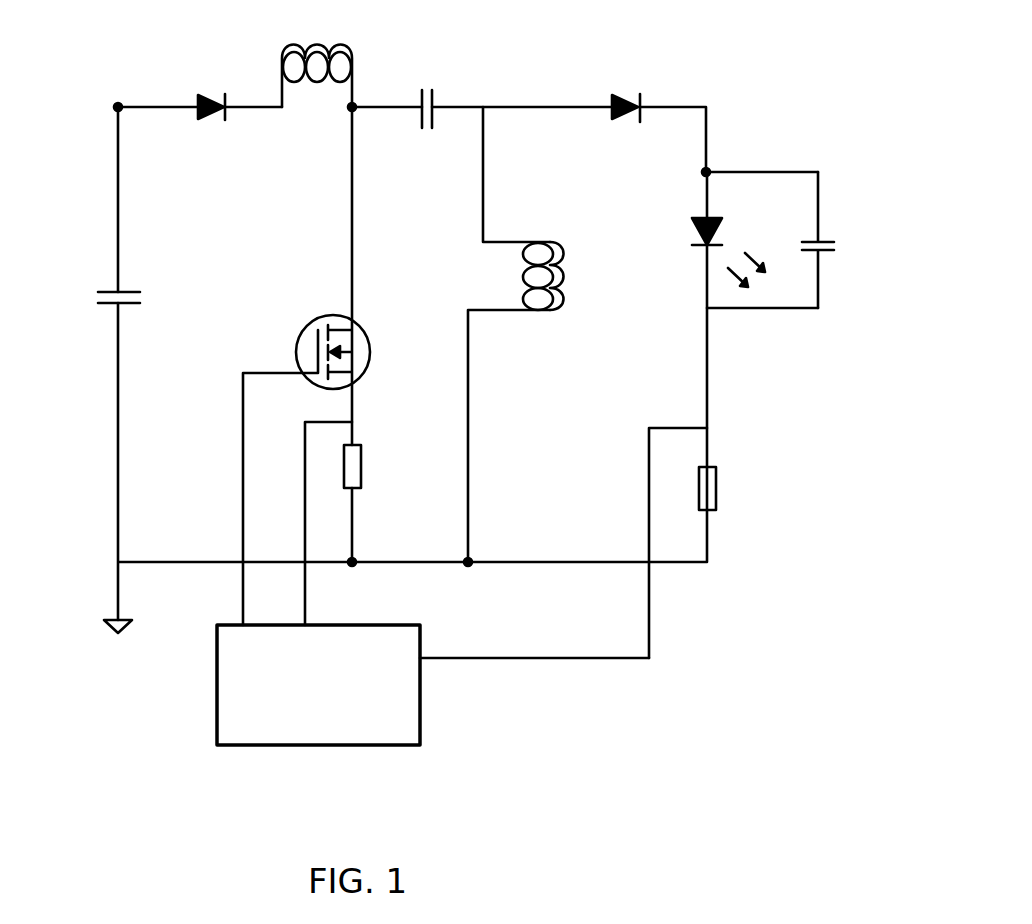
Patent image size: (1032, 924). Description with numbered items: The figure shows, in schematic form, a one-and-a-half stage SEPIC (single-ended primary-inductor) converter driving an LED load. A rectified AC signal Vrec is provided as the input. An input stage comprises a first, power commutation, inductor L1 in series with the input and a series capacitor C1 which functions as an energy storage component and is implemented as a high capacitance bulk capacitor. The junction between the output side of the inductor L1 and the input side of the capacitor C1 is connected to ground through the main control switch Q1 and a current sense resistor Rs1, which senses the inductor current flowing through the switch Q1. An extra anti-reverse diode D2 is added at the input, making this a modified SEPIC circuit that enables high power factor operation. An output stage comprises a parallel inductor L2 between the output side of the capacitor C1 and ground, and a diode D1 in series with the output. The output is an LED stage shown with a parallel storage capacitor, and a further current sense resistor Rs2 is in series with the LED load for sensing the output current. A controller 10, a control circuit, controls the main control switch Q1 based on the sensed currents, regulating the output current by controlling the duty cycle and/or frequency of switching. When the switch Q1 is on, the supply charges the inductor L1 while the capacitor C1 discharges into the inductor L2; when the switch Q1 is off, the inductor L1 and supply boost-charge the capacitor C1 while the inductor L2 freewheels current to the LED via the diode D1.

The controller 10 is at (418, 716).
The rectified AC signal Vrec is at (78, 303).
The anti-reverse diode D2 is at (217, 88).
The first inductor L1 is at (317, 59).
The series capacitor C1 is at (425, 92).
The diode D1 is at (630, 88).
The parallel inductor L2 is at (534, 334).
The element LED is at (722, 263).
The main control switch Q1 is at (306, 366).
The current sense resistor Rs1 is at (360, 523).
The further current sense resistor Rs2 is at (713, 543).